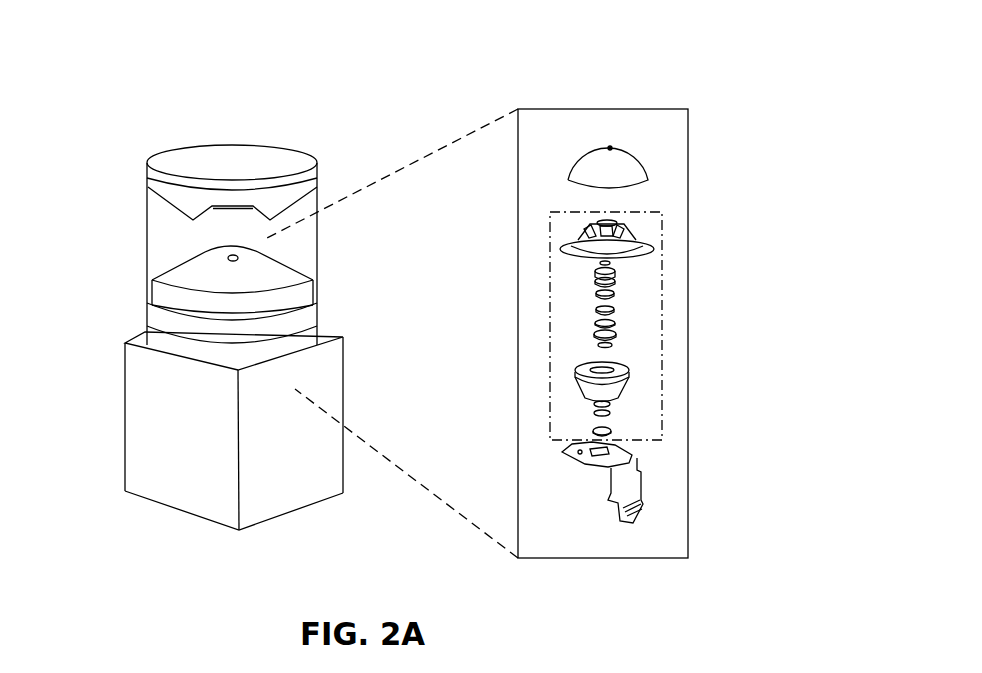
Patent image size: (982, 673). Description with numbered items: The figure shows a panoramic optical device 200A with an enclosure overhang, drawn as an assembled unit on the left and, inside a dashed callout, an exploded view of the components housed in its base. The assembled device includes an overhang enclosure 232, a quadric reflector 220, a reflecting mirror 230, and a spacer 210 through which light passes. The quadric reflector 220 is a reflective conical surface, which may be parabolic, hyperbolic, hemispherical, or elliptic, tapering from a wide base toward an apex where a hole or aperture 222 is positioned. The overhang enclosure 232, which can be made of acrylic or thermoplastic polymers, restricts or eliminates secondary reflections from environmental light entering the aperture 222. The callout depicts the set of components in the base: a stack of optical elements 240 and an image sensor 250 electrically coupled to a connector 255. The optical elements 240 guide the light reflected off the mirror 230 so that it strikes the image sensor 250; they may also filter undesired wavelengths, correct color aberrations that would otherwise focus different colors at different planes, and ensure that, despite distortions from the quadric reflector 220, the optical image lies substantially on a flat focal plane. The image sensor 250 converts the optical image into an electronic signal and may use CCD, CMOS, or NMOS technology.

The panoramic optical device 200A is at (857, 24).
The spacer 210 is at (147, 230).
The quadric reflector 220 is at (275, 268).
The aperture 222 is at (610, 148).
The reflecting mirror 230 is at (228, 207).
The overhang enclosure 232 is at (210, 145).
The optical elements 240 is at (550, 272).
The image sensor 250 is at (597, 457).
The connector 255 is at (604, 505).